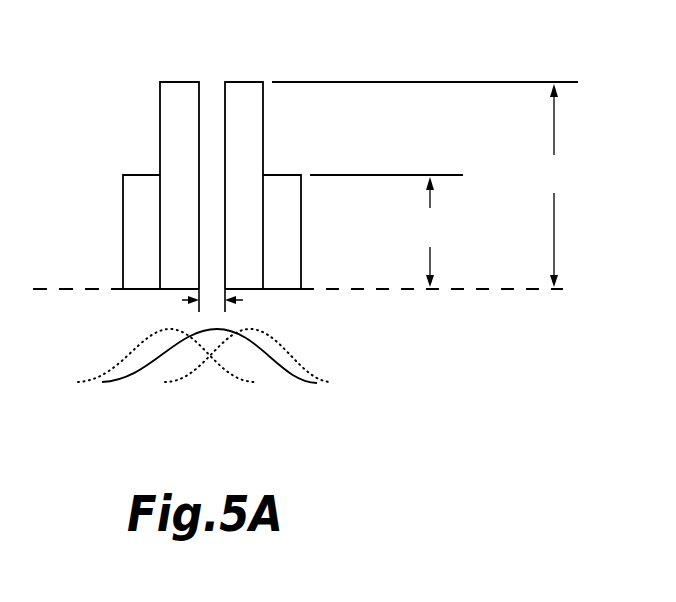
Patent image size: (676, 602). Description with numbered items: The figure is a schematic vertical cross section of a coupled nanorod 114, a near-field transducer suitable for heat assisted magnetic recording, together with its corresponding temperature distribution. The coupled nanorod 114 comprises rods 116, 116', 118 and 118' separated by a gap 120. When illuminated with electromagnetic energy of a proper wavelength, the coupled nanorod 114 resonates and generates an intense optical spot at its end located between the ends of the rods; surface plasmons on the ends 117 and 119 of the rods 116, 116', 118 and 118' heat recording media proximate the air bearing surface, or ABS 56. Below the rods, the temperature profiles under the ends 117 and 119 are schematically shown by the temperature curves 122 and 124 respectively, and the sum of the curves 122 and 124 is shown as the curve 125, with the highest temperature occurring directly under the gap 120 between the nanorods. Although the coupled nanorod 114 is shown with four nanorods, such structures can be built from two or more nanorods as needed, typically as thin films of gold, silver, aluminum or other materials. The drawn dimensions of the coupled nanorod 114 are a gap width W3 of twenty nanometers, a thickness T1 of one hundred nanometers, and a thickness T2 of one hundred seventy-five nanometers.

The ABS 56 is at (397, 290).
The coupled nanorod 114 is at (300, 50).
The rod 116 is at (138, 185).
The rod 116' is at (101, 232).
The end 117 is at (142, 291).
The rod 118 is at (288, 185).
The rod 118' is at (325, 232).
The end 119 is at (285, 291).
The gap 120 is at (210, 85).
The temperature curve 122 is at (202, 338).
The temperature curve 124 is at (223, 340).
The curve 125 is at (217, 330).
The gap width dimension W3 is at (227, 301).
The thickness dimension T1 is at (431, 232).
The thickness dimension T2 is at (556, 185).